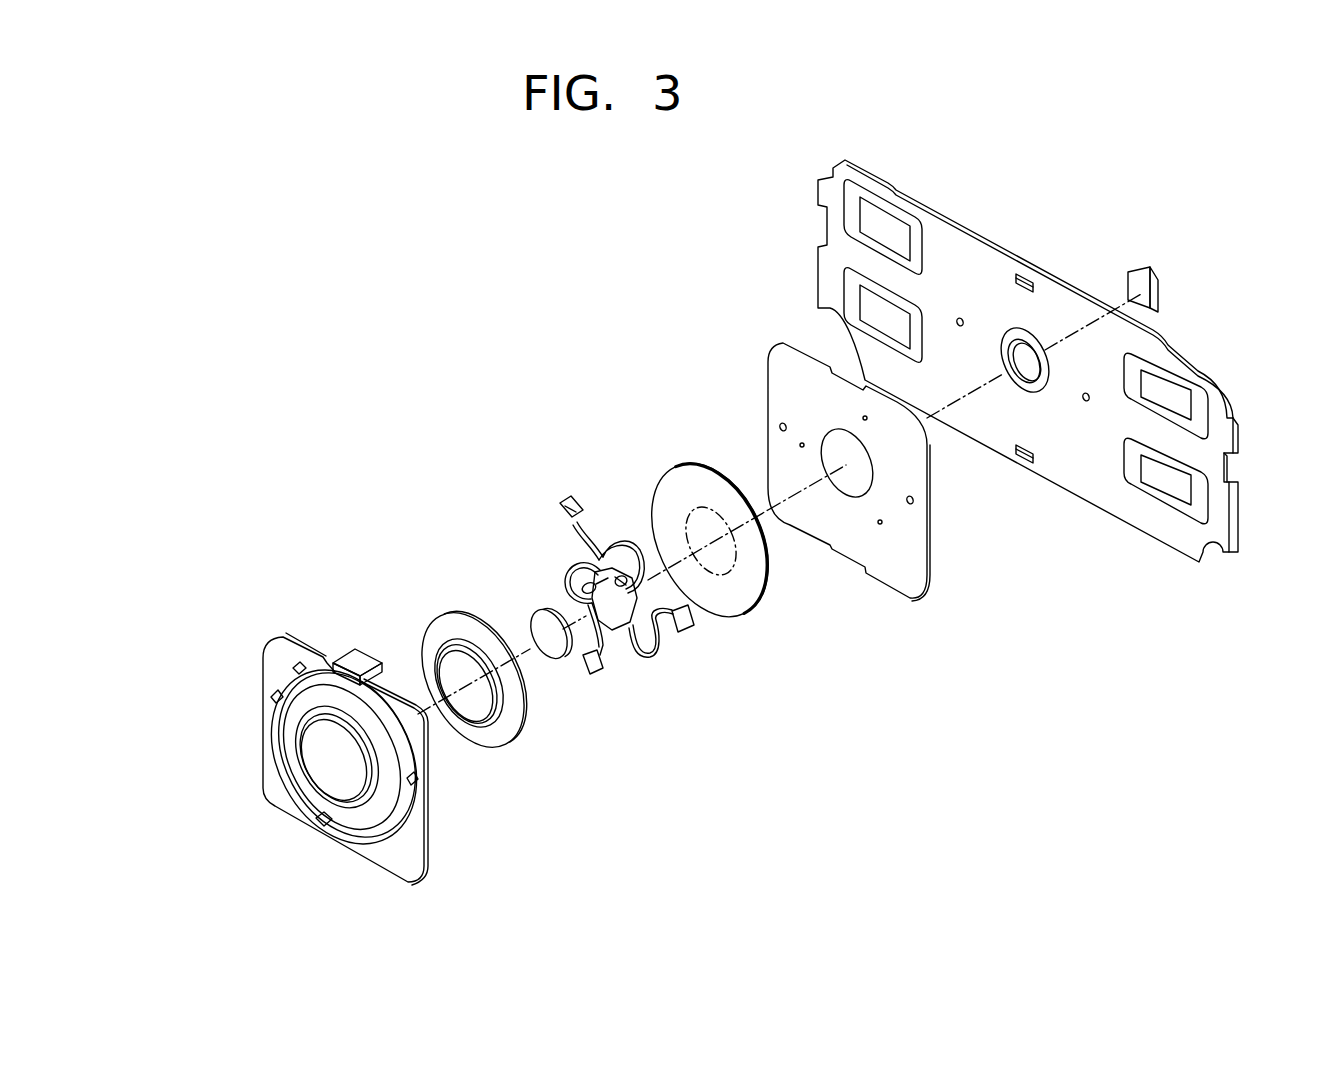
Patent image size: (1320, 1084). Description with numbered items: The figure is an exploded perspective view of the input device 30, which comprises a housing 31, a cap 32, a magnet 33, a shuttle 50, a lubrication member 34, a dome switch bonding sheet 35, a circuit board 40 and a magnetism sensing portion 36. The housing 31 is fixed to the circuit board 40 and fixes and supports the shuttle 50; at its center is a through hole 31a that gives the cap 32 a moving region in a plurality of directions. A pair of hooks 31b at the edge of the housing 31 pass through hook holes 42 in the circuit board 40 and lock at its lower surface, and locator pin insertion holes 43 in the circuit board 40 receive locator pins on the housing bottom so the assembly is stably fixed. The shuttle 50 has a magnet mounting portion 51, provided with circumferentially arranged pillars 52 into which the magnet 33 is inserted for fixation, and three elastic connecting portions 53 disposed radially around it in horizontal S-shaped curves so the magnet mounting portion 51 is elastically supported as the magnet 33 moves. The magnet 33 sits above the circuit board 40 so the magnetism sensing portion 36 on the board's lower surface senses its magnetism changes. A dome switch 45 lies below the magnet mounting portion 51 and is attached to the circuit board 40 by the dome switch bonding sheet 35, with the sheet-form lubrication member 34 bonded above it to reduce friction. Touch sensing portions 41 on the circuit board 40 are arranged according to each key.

The input device 30 is at (258, 626).
The housing 31 is at (392, 853).
The through hole 31a is at (312, 780).
The hooks 31b is at (351, 652).
The cap 32 is at (493, 733).
The magnet 33 is at (550, 648).
The lubrication member 34 is at (737, 600).
The dome switch bonding sheet 35 is at (900, 563).
The magnetism sensing portion 36 is at (1142, 283).
The circuit board 40 is at (942, 232).
The touch sensing portions 41 is at (852, 217).
The hook holes 42 is at (1023, 274).
The locator pin insertion holes 43 is at (960, 317).
The dome switch 45 is at (1033, 367).
The shuttle 50 is at (533, 543).
The magnet mounting portion 51 is at (617, 600).
The pillars 52 is at (637, 652).
The elastic connecting portions 53 is at (619, 545).